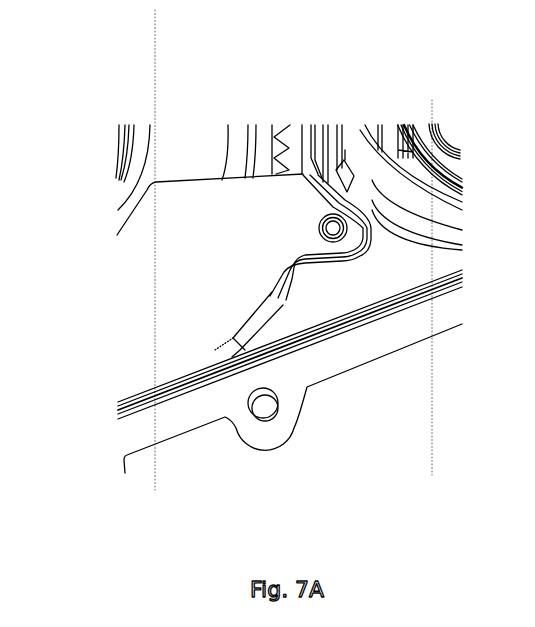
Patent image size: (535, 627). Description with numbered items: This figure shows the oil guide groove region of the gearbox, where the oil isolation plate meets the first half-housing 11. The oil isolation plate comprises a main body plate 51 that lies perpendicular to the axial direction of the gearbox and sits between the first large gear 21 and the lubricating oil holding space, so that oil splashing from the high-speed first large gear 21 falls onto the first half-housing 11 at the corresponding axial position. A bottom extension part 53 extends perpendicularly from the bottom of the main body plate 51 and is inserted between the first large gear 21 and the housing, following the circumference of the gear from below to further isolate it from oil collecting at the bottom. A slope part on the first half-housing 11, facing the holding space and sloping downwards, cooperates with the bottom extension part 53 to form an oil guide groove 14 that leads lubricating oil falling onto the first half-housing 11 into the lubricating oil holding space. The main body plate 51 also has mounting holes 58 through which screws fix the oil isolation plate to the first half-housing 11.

The first half-housing 11 is at (385, 290).
The oil guide groove 14 is at (290, 293).
The first large gear 21 is at (270, 135).
The main body plate 51 is at (177, 303).
The bottom extension part 53 is at (302, 125).
The mounting holes 58 is at (345, 205).